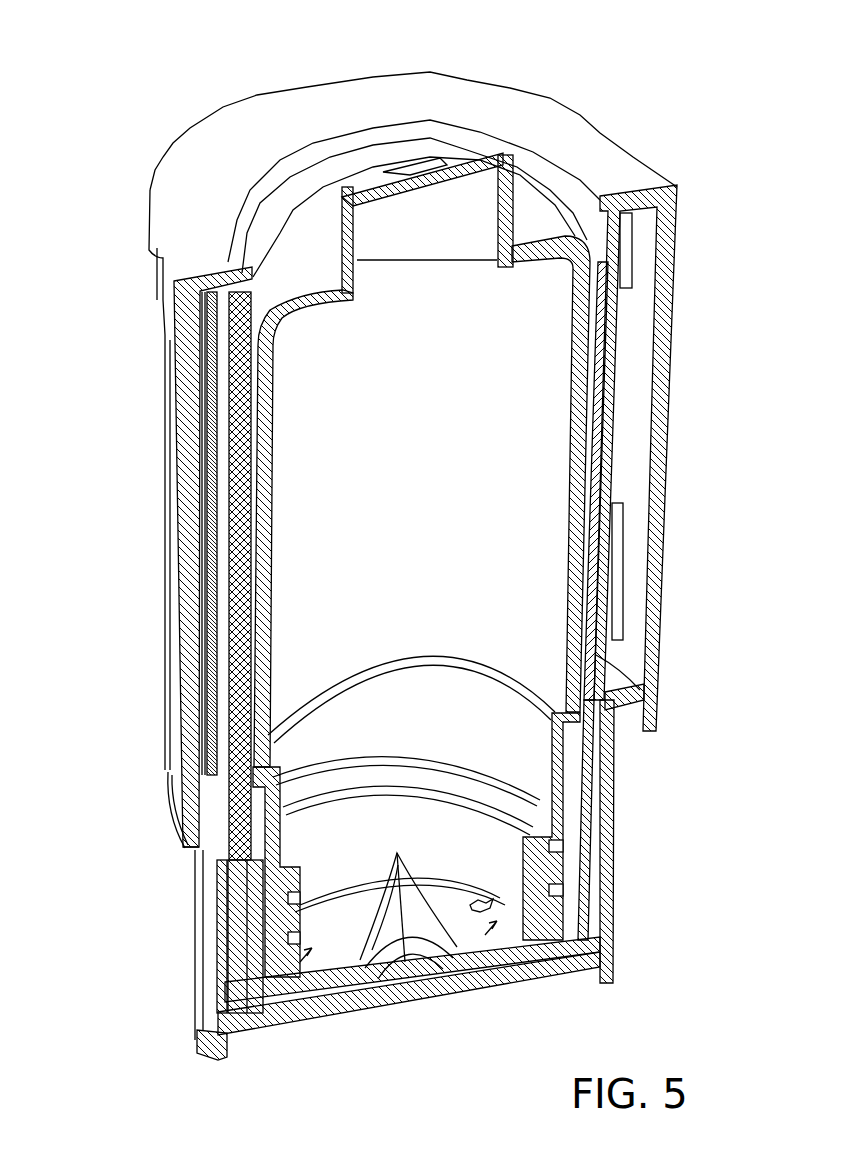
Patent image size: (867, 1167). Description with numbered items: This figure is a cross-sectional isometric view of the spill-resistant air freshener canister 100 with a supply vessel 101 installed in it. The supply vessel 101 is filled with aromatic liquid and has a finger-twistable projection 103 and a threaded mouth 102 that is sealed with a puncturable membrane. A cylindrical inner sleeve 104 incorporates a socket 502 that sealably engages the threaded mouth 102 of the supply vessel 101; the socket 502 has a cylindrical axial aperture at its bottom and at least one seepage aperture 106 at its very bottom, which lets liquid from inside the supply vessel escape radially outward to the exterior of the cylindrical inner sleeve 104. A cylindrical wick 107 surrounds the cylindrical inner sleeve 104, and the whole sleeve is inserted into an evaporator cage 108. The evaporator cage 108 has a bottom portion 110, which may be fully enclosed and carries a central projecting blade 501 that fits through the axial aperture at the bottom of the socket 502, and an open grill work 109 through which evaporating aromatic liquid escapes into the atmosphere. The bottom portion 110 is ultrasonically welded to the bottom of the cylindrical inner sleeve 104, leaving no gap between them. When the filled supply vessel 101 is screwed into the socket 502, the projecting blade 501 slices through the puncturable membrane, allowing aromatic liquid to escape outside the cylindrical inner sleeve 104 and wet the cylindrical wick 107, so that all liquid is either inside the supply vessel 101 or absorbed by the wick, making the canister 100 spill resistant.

The spill-resistant air freshener canister 100 is at (692, 131).
The supply vessel 101 is at (525, 225).
The threaded mouth 102 is at (537, 880).
The finger-twistable projection 103 is at (373, 160).
The cylindrical inner sleeve 104 is at (222, 155).
The seepage aperture 106 is at (537, 972).
The cylindrical wick 107 is at (603, 787).
The evaporator cage 108 is at (175, 806).
The open grill work 109 is at (657, 445).
The bottom portion 110 is at (613, 947).
The projecting blade 501 is at (413, 968).
The socket 502 is at (243, 943).